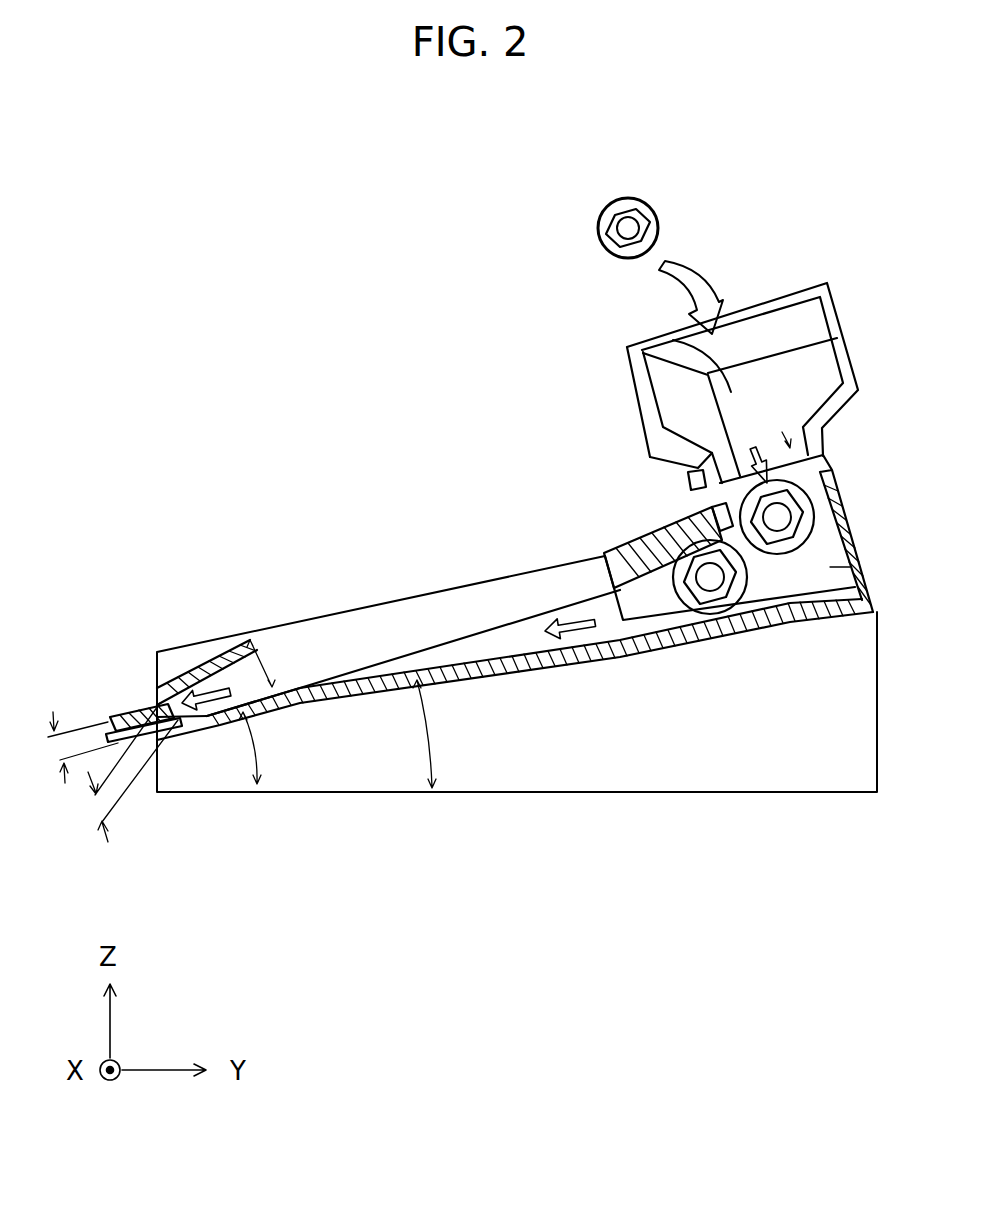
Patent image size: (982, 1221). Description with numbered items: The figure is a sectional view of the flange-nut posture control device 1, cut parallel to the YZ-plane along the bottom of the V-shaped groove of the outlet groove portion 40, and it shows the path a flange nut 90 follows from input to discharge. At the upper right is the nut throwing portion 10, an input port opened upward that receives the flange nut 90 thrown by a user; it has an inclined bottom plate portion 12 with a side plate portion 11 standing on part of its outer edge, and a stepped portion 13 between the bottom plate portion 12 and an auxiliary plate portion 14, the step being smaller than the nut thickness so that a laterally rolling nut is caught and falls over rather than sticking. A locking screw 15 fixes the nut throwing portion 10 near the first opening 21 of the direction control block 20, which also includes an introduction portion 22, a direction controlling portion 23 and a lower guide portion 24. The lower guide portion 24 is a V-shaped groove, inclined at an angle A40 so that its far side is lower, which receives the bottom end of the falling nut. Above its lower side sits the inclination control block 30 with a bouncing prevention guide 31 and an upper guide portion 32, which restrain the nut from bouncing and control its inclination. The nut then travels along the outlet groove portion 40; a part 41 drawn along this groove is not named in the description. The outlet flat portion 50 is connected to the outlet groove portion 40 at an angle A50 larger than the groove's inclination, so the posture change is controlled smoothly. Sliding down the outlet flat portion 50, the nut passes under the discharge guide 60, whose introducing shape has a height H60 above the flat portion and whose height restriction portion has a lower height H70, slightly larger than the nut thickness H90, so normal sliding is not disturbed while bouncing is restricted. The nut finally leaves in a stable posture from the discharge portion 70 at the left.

The flange-nut posture control device 1 is at (358, 254).
The flange nut 90 is at (598, 208).
The nut throwing portion 10 is at (768, 298).
The side plate portion 11 is at (839, 297).
The bottom plate portion 12 is at (664, 339).
The stepped portion 13 is at (728, 417).
The auxiliary plate portion 14 is at (672, 400).
The locking screw 15 is at (660, 477).
The first opening 21 is at (790, 432).
The direction control block 20 is at (835, 477).
The introduction portion 22 is at (822, 513).
The direction controlling portion 23 is at (832, 567).
The lower guide portion 24 is at (756, 632).
The inclination control block 30 is at (607, 481).
The bouncing prevention guide 31 is at (682, 523).
The upper guide portion 32 is at (622, 548).
The outlet groove portion 40 is at (493, 647).
The bottom plate 41 is at (602, 594).
The outlet flat portion 50 is at (288, 686).
The discharge guide 60 is at (197, 665).
The discharge portion 70 is at (114, 707).
The height of introducing shape H60 is at (268, 678).
The thickness of flange nut H90 is at (61, 747).
The height of height restriction portion H70 is at (112, 772).
The inclination angle of outlet flat portion A50 is at (274, 748).
The inclination angle of lower guide portion A40 is at (448, 734).